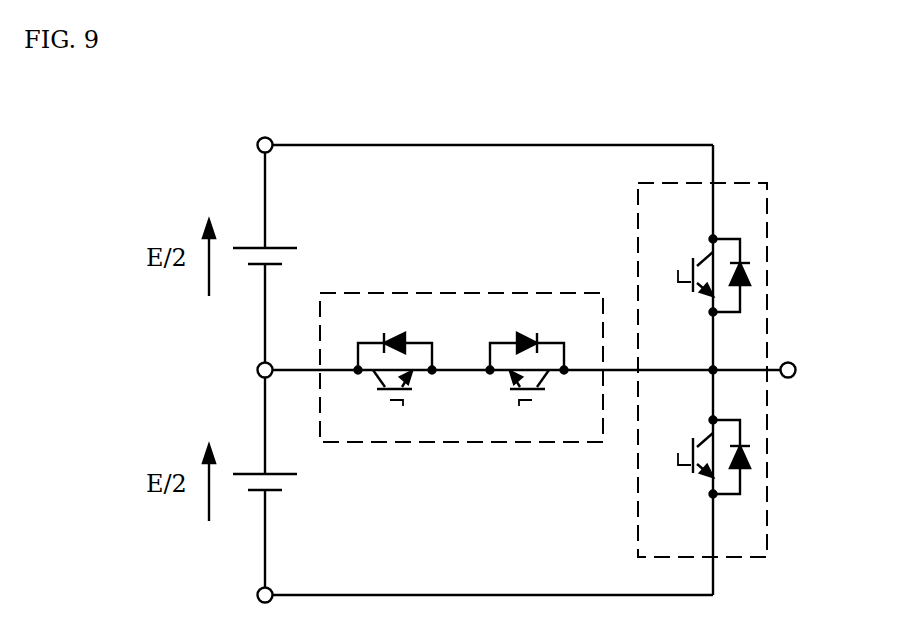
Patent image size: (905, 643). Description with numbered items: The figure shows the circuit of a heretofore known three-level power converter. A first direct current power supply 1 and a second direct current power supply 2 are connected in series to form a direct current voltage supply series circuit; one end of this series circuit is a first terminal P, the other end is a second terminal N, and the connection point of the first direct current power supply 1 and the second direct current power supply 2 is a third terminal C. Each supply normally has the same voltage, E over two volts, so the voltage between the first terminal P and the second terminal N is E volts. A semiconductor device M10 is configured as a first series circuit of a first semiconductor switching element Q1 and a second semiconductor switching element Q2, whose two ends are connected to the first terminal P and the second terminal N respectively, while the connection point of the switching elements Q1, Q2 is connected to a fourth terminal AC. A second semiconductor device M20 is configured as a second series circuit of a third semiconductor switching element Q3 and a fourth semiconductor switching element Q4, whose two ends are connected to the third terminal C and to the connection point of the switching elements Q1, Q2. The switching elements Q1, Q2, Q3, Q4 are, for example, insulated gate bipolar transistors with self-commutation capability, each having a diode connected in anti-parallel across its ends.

The first direct current power supply 1 is at (250, 240).
The second direct current power supply 2 is at (259, 471).
The semiconductor device M10 is at (767, 253).
The semiconductor device M20 is at (454, 293).
The first semiconductor switching element Q1 is at (703, 270).
The second semiconductor switching element Q2 is at (703, 467).
The third semiconductor switching element Q3 is at (395, 386).
The fourth semiconductor switching element Q4 is at (527, 386).
The first terminal P is at (254, 158).
The third terminal C is at (252, 371).
The second terminal N is at (253, 581).
The fourth terminal AC is at (805, 388).